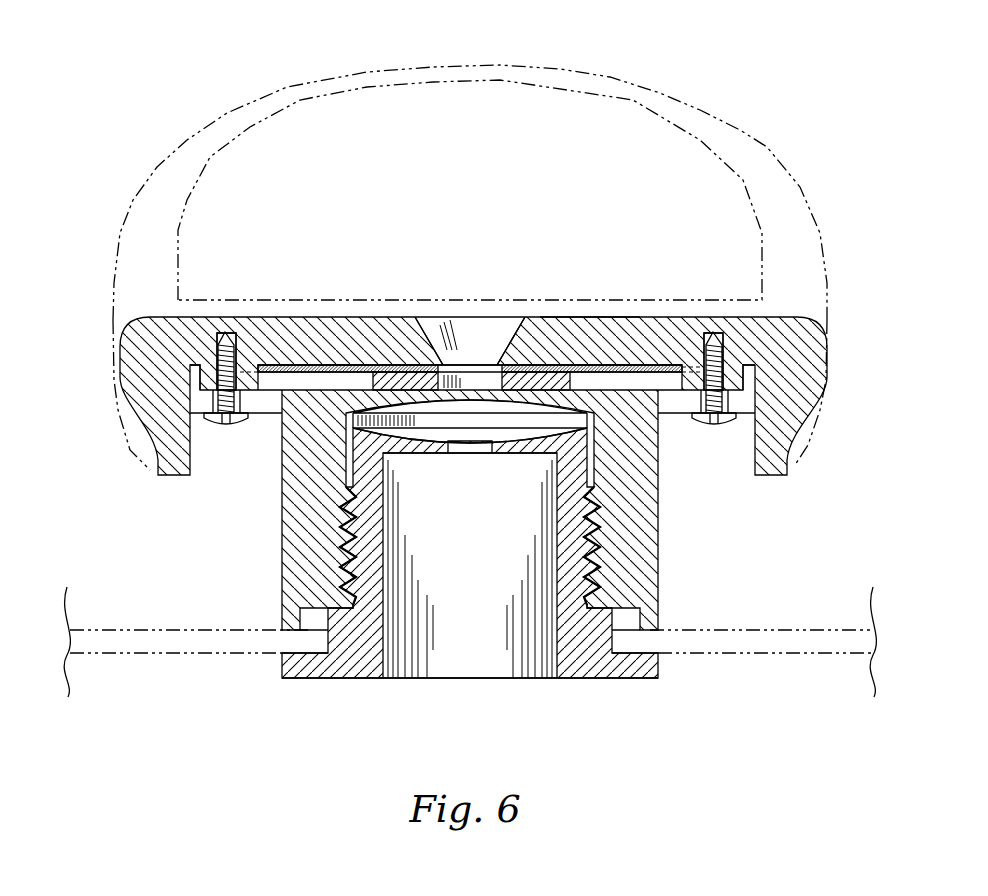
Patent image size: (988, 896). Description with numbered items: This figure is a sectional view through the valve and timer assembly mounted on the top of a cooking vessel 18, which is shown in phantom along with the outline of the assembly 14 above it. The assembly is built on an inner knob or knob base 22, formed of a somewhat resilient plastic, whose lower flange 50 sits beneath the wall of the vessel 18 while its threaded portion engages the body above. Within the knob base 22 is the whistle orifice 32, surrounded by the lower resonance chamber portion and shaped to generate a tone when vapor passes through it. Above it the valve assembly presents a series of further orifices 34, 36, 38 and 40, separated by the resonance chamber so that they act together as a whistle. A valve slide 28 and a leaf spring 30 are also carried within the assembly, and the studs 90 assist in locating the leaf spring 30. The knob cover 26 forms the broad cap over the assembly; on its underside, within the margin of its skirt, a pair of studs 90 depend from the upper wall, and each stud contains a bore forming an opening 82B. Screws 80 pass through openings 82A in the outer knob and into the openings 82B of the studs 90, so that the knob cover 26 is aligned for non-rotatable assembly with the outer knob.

The cover (phantom) 14 is at (633, 78).
The cooking vessel 18 is at (140, 645).
The knob base 22 is at (578, 665).
The knob cover 26 is at (506, 468).
The valve slide 28 is at (553, 382).
The leaf spring 30 is at (378, 374).
The whistle orifice 32 is at (472, 447).
The orifice 34 is at (492, 368).
The orifice 36 is at (455, 388).
The orifice 38 is at (483, 390).
The orifice 40 is at (485, 396).
The lower flange 50 is at (636, 673).
The screws 80 is at (724, 422).
The openings 82A is at (730, 398).
The openings 82B is at (700, 345).
The studs 90 is at (740, 377).